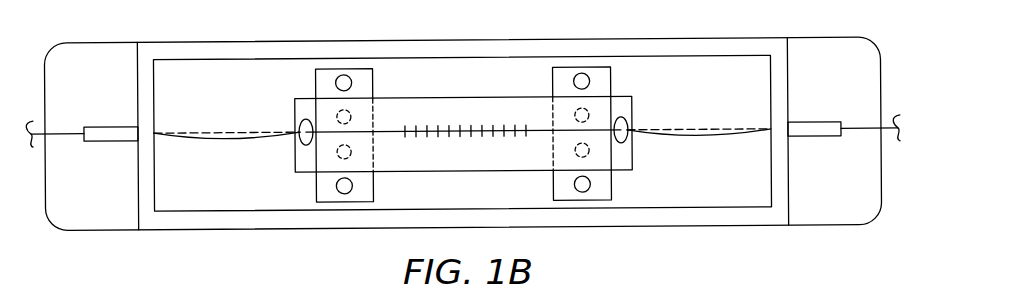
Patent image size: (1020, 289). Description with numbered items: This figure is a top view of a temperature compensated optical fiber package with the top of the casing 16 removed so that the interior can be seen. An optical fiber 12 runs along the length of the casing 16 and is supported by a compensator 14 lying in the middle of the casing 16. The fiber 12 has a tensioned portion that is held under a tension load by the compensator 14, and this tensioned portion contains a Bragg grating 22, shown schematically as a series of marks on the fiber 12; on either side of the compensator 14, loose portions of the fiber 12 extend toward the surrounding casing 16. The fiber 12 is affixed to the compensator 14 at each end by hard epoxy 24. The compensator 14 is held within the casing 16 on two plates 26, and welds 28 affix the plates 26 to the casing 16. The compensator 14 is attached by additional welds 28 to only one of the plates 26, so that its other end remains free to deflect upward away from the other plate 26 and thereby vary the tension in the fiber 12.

The optical fiber 12 is at (463, 116).
The compensator 14 is at (442, 120).
The casing 16 is at (463, 115).
The Bragg grating 22 is at (472, 134).
The hard epoxy 24 is at (663, 104).
The plates 26 is at (373, 82).
The welds 28 is at (351, 152).